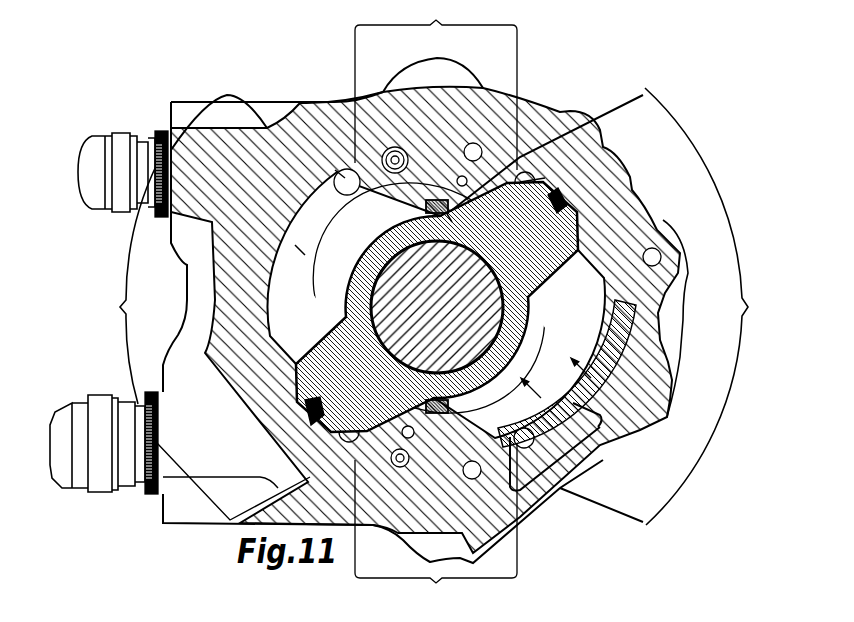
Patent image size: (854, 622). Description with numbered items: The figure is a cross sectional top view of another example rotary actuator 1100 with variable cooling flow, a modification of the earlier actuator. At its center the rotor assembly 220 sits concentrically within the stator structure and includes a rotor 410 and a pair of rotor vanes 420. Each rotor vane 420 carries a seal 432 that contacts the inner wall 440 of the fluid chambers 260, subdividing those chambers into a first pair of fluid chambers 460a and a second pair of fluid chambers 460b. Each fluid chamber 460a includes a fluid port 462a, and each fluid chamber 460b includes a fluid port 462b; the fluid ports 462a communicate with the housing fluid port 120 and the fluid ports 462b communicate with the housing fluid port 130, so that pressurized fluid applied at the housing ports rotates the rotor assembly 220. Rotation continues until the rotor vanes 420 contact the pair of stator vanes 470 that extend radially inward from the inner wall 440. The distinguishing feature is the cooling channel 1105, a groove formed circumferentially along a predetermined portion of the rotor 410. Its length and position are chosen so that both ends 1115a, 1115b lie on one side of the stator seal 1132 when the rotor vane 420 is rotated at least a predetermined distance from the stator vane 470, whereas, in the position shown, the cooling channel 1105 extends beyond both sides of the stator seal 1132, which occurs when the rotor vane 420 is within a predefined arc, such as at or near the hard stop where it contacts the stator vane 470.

The rotary actuator 1100 is at (155, 93).
The fluid port 130 is at (83, 147).
The fluid port 120 is at (60, 478).
The fluid chambers 260 is at (436, 306).
The stator vanes 470 is at (436, 303).
The rotor vanes 420 is at (214, 328).
The inner wall 440 is at (268, 270).
The cooling channel 1105 is at (530, 296).
The seal 432 is at (307, 420).
The stator seal 1132 is at (440, 200).
The end of the cooling channel 1115a is at (420, 206).
The end of the cooling channel 1115b is at (450, 228).
The rotor 410 is at (295, 259).
The rotor assembly 220 is at (349, 259).
The first pair of fluid chambers 460a is at (527, 163).
The second pair of fluid chambers 460b is at (295, 245).
The fluid port 462a is at (547, 111).
The fluid port 462b is at (335, 170).